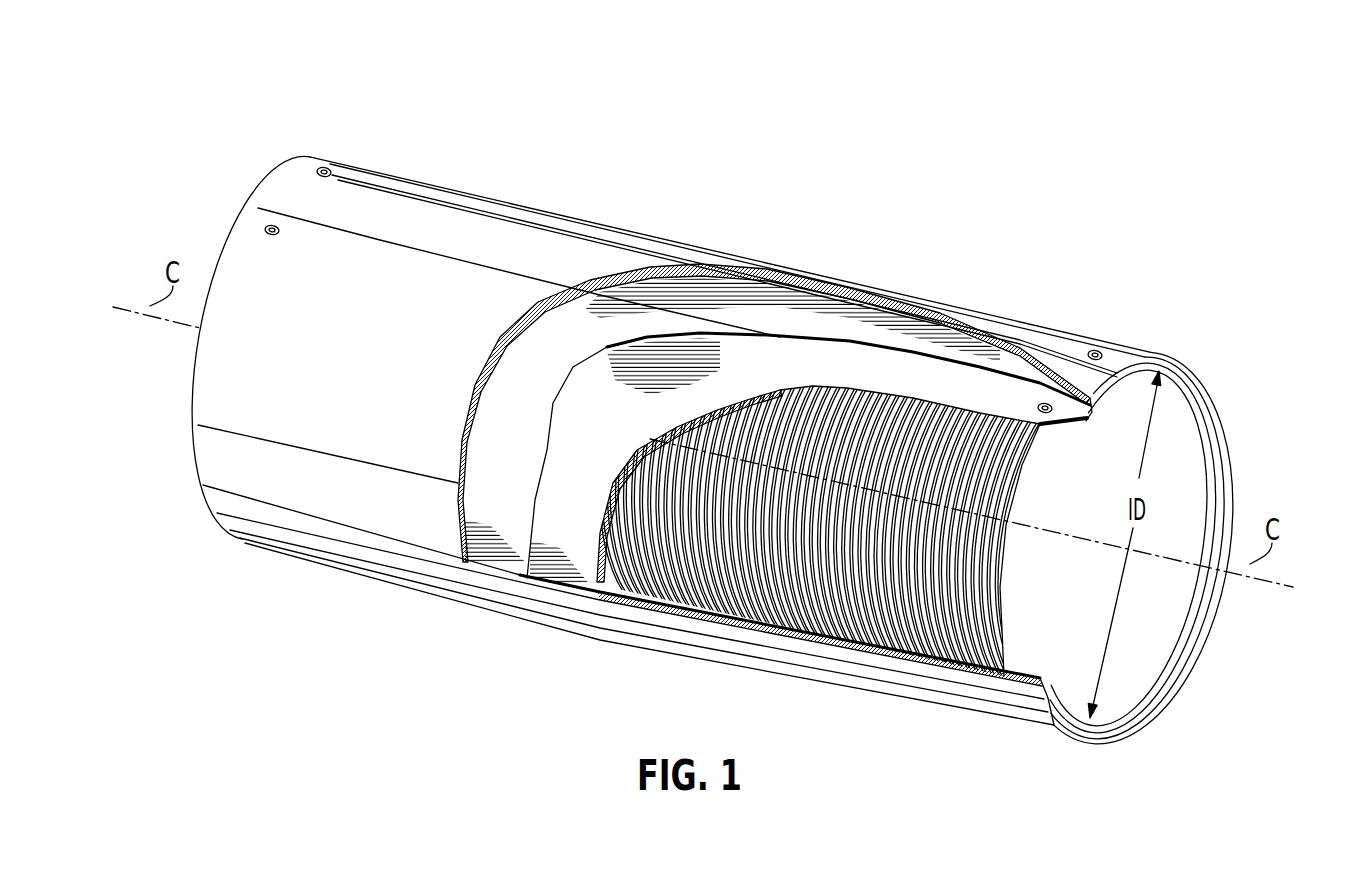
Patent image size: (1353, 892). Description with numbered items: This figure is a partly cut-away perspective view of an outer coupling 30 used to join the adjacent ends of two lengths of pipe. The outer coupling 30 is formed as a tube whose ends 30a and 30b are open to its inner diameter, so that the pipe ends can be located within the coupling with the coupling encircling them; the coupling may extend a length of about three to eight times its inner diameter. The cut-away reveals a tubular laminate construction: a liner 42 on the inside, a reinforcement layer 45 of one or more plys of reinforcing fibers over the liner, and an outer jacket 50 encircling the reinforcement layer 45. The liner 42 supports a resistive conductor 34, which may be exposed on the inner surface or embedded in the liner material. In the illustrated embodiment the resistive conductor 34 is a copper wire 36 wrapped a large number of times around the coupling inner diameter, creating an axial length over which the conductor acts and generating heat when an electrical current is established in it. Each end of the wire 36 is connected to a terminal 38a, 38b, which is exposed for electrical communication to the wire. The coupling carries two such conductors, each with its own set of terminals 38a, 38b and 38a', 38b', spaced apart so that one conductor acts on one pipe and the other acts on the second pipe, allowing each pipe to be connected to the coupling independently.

The outer coupling 30 is at (555, 142).
The end of outer coupling 30a is at (1214, 414).
The end of outer coupling 30b is at (196, 451).
The resistive conductor 34 is at (840, 583).
The wire 36 is at (992, 630).
The terminal 38a is at (1122, 304).
The terminal 38b is at (1061, 320).
The terminal 38a' is at (488, 236).
The terminal 38b' is at (716, 222).
The liner 42 is at (1155, 405).
The reinforcement layer 45 is at (727, 300).
The outer jacket 50 is at (594, 238).